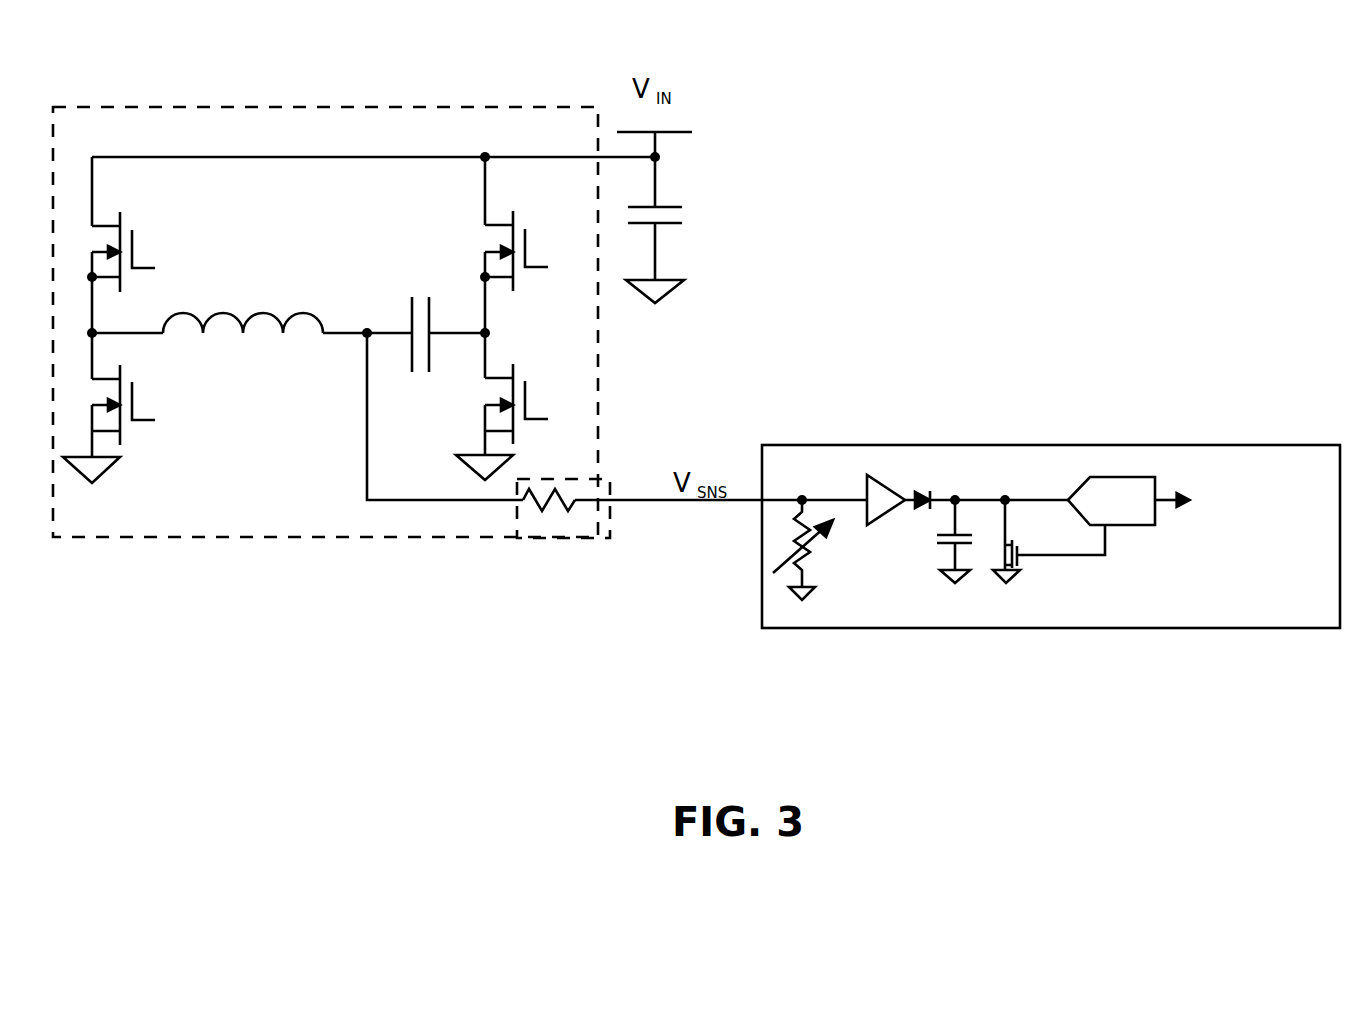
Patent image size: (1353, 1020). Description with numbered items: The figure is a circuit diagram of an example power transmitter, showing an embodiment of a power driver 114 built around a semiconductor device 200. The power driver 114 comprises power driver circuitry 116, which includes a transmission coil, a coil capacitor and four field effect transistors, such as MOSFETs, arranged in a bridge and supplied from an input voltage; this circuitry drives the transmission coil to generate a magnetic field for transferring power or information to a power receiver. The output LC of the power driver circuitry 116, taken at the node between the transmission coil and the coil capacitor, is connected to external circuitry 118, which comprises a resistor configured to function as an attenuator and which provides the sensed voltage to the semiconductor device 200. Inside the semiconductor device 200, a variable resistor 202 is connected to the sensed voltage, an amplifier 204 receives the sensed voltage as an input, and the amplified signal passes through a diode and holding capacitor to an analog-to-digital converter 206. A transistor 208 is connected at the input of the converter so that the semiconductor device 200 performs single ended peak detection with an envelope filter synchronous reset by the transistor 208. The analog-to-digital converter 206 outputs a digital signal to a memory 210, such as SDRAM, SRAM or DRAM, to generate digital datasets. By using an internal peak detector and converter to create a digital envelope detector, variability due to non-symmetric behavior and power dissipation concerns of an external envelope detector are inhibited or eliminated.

The power driver 114 is at (236, 66).
The power driver circuitry 116 is at (375, 106).
The external circuitry 118 is at (557, 540).
The semiconductor device 200 is at (866, 446).
The variable resistor 202 is at (797, 533).
The amplifier 204 is at (872, 524).
The analog-to-digital converter 206 is at (1108, 476).
The transistor 208 is at (1019, 557).
The memory 210 is at (1241, 506).